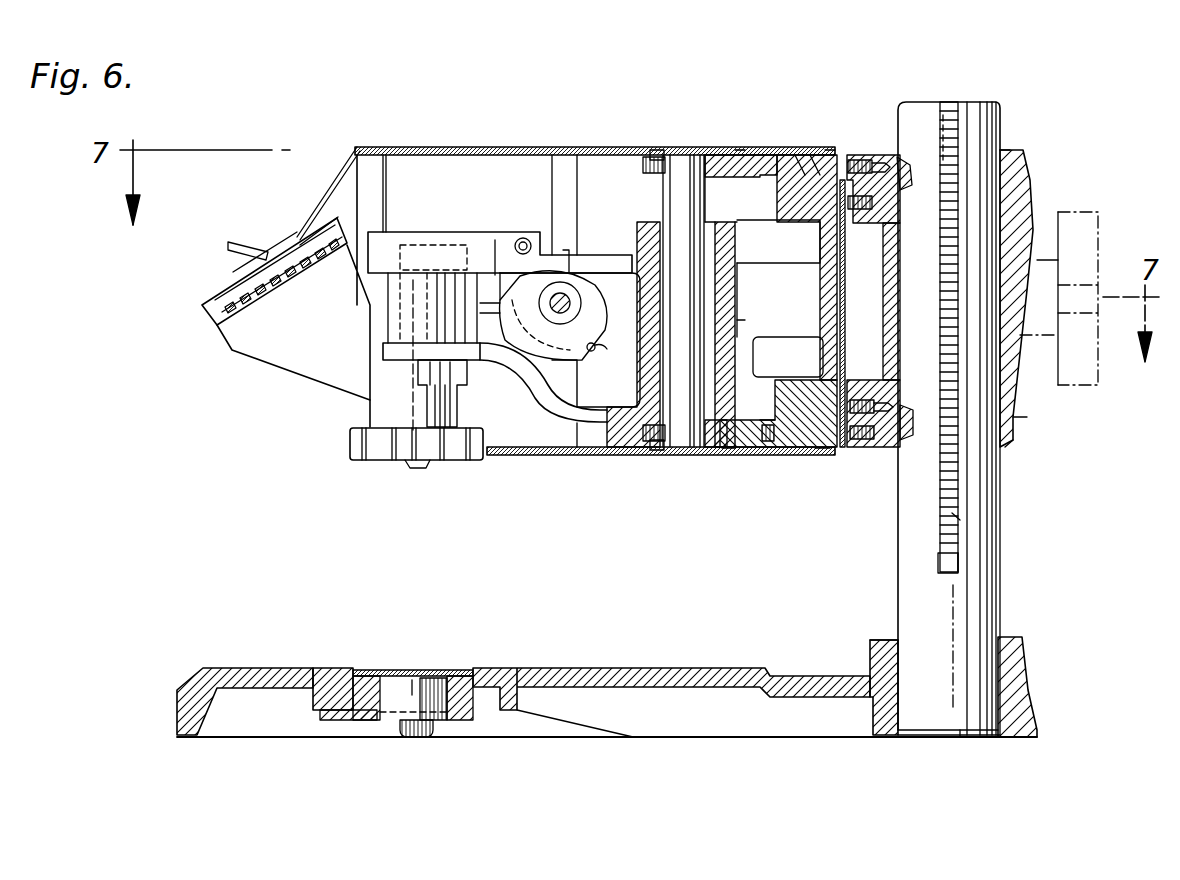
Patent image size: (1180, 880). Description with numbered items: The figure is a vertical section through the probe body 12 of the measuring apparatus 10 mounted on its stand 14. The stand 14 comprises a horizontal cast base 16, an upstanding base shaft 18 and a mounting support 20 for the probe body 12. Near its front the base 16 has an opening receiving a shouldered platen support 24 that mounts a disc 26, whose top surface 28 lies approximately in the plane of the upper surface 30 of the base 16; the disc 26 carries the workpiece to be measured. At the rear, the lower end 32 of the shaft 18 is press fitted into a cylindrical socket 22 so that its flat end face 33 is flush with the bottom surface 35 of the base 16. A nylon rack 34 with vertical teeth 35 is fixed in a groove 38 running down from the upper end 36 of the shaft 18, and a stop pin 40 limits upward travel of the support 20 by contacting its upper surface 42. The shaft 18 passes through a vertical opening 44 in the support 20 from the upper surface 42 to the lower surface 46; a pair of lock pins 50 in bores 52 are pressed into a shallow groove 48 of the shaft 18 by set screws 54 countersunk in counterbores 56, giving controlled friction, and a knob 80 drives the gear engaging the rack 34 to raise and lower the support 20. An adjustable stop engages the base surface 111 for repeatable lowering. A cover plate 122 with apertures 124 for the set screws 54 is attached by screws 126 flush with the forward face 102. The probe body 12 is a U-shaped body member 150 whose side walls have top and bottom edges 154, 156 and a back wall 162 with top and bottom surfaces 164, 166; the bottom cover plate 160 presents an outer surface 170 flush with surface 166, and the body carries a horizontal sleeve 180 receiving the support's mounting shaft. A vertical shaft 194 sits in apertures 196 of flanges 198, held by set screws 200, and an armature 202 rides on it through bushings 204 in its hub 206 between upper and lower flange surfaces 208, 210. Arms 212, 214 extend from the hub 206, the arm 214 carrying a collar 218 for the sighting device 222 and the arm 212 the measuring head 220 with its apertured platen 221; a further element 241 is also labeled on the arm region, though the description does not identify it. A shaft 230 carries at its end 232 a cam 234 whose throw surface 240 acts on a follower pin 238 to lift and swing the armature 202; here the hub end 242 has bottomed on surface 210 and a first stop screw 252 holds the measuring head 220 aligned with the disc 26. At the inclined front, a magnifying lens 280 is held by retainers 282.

The measuring system or apparatus 10 is at (1078, 159).
The probe body 12 is at (369, 248).
The stand 14 is at (990, 663).
The base 16 is at (572, 702).
The base shaft 18 is at (905, 416).
The mounting support 20 is at (1047, 295).
The cylindrical socket 22 is at (947, 754).
The platen support 24 is at (338, 741).
The disc 26 is at (413, 645).
The top surface of disc 28 is at (413, 672).
The upper surface of base 30 is at (591, 680).
The lower end of shaft 32 is at (856, 687).
The flat end face of shaft 33 is at (991, 749).
The rack 34 is at (1003, 555).
The bottom surface of base / rack teeth 35 is at (937, 627).
The upper end of shaft 36 is at (1000, 396).
The groove 38 is at (899, 554).
The stop pin 40 is at (942, 312).
The upper surface of support 42 is at (1025, 124).
The vertical opening 44 is at (1036, 420).
The lower surface of support 46 is at (1037, 449).
The shallow groove 48 is at (888, 312).
The lock pins 50 is at (883, 274).
The cylindrical bores 52 is at (913, 284).
The set screws 54 is at (864, 304).
The counterbores 56 is at (857, 285).
The knob 80 is at (1079, 280).
The forward face 102 is at (813, 473).
The base surface 111 is at (862, 618).
The cover plate 122 is at (790, 357).
The apertures 124 is at (803, 297).
The screws 126 is at (887, 313).
The body member 150 is at (738, 109).
The top edges of side walls 154 is at (595, 115).
The bottom edges of side walls 156 is at (661, 474).
The bottom cover plate 160 is at (565, 452).
The back wall 162 is at (804, 267).
The top surface of back wall 164 is at (830, 109).
The bottom surface of back wall 166 is at (773, 458).
The outer surface of bottom cover plate 170 is at (720, 471).
The cylindrical sleeve portion 180 is at (763, 300).
The vertical shaft 194 is at (746, 334).
The apertures in flanges 196 is at (681, 290).
The flanges 198 is at (641, 289).
The set screws 200 is at (628, 296).
The armature 202 is at (631, 301).
The bushings 204 is at (721, 312).
The hub portion 206 is at (766, 320).
The upper flange surface 208 is at (762, 209).
The lower flange surface 210 is at (770, 448).
The instrument holder arm 212 is at (622, 333).
The instrument holder arm 214 is at (541, 382).
The holding collar 218 is at (468, 257).
The measuring head or probe 220 is at (293, 368).
The apertured platen 221 is at (416, 459).
The sighting device 222 is at (394, 351).
The shaft 230 is at (588, 303).
The other end of shaft 232 is at (553, 315).
The cam 234 is at (609, 357).
The cam follower pin 238 is at (582, 301).
The throw surface 240 is at (570, 340).
The pointer 241 is at (474, 238).
The end of armature hub 242 is at (712, 446).
The first stop screw 252 is at (520, 220).
The magnifying lens 280 is at (260, 236).
The retainers 282 is at (243, 277).